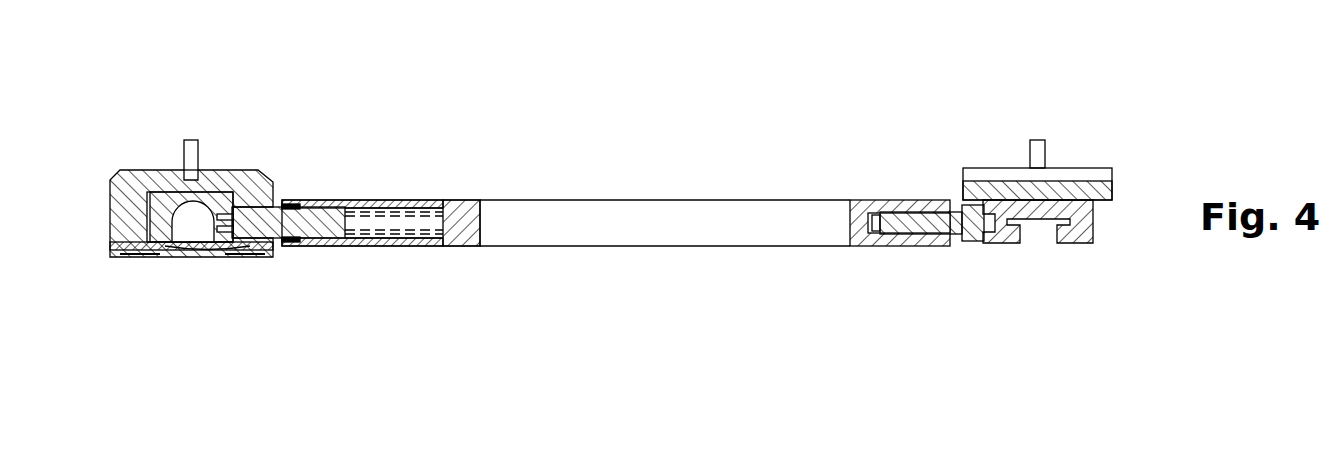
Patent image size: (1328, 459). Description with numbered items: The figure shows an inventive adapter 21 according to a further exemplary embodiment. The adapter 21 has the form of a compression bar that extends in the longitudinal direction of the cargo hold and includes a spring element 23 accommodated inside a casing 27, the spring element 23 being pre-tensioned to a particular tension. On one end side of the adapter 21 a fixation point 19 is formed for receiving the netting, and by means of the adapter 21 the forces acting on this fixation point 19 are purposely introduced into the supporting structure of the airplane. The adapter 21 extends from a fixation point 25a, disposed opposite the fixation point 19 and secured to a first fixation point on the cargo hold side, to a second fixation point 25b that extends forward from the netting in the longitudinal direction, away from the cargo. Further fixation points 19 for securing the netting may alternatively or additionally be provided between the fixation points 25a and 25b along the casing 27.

The fixation point 19 is at (1039, 225).
The adapter 21 is at (502, 300).
The spring element 23 is at (386, 212).
The fixation point 25a is at (1038, 145).
The second fixation point 25b is at (192, 145).
The casing 27 is at (636, 218).